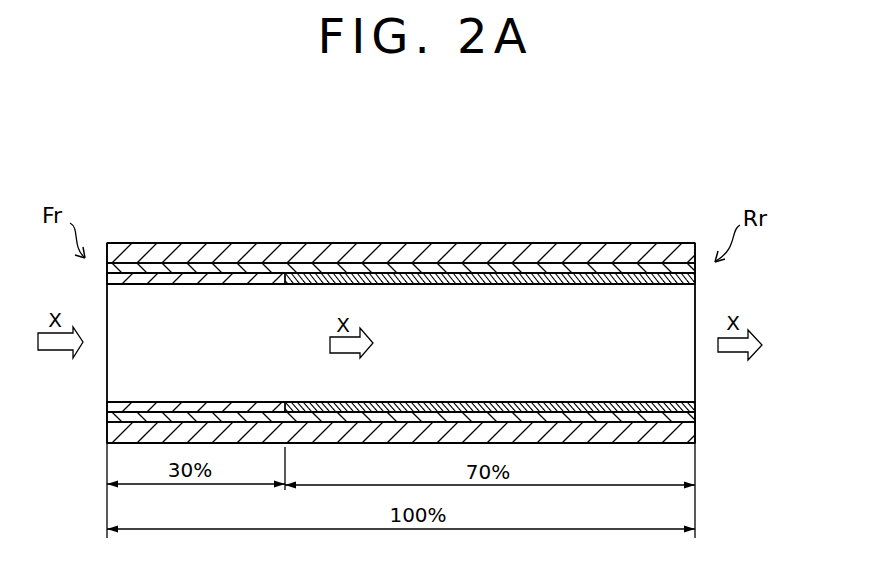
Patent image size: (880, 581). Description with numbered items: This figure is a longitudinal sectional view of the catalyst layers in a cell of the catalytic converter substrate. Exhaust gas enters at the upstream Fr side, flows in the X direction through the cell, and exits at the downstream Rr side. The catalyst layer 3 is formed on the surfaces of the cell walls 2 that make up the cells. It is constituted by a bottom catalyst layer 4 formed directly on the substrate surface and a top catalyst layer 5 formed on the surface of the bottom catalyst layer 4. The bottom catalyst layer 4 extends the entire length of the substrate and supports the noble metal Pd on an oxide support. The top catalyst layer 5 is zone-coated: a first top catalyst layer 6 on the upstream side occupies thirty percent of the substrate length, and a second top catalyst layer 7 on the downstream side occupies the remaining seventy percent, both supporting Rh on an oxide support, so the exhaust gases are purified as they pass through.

The cell wall 2 is at (241, 244).
The catalyst layer 3 is at (543, 155).
The bottom catalyst layer 4 is at (527, 262).
The top catalyst layer 5 is at (313, 198).
The first top catalyst layer 6 is at (275, 268).
The second top catalyst layer 7 is at (407, 276).